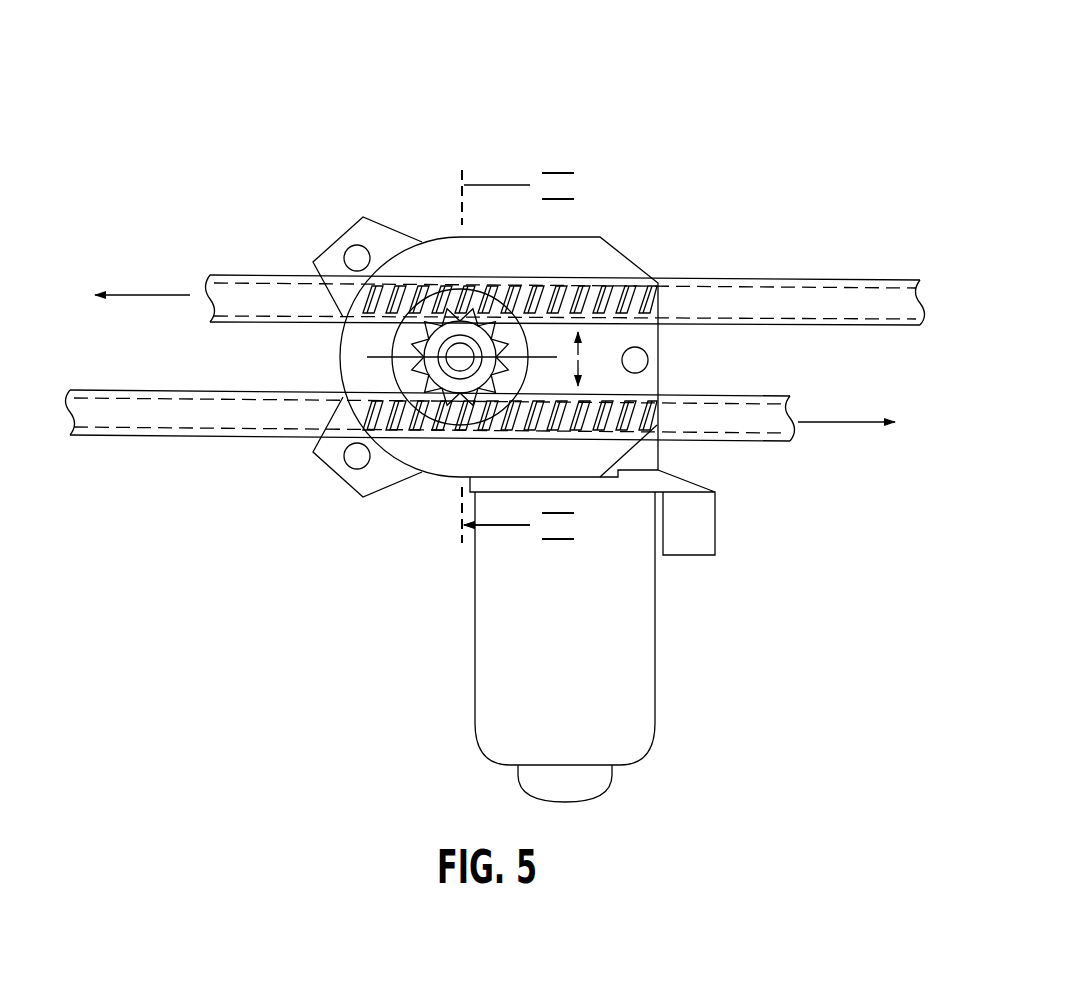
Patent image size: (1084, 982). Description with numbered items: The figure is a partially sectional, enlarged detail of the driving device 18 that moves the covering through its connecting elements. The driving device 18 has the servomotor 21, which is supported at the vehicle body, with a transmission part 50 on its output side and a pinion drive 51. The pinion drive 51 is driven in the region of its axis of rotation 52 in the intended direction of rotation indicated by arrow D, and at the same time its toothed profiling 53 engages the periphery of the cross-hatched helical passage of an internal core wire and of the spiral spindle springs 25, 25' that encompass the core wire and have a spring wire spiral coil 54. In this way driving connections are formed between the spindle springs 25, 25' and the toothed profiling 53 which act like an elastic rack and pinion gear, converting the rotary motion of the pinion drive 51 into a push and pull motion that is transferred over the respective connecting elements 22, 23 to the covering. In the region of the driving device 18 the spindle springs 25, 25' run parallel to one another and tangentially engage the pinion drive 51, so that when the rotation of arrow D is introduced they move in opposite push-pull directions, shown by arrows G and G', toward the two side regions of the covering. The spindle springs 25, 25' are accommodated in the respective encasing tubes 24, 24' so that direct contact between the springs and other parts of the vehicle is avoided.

The driving device 18 is at (604, 113).
The servomotor 21 is at (632, 637).
The connecting element 22 is at (178, 443).
The connecting element 23 is at (860, 280).
The encasing tube 24 is at (573, 461).
The encasing tube 24' is at (597, 257).
The spindle spring 25 is at (368, 488).
The spindle spring 25' is at (649, 240).
The transmission part 50 is at (452, 465).
The pinion drive 51 is at (440, 326).
The axis of rotation 52 is at (460, 357).
The toothed profiling 53 is at (503, 347).
The spring wire spiral coil 54 is at (620, 408).
The direction of rotation D is at (582, 360).
The push-pull movement direction G is at (142, 242).
The push-pull movement direction G' is at (846, 470).